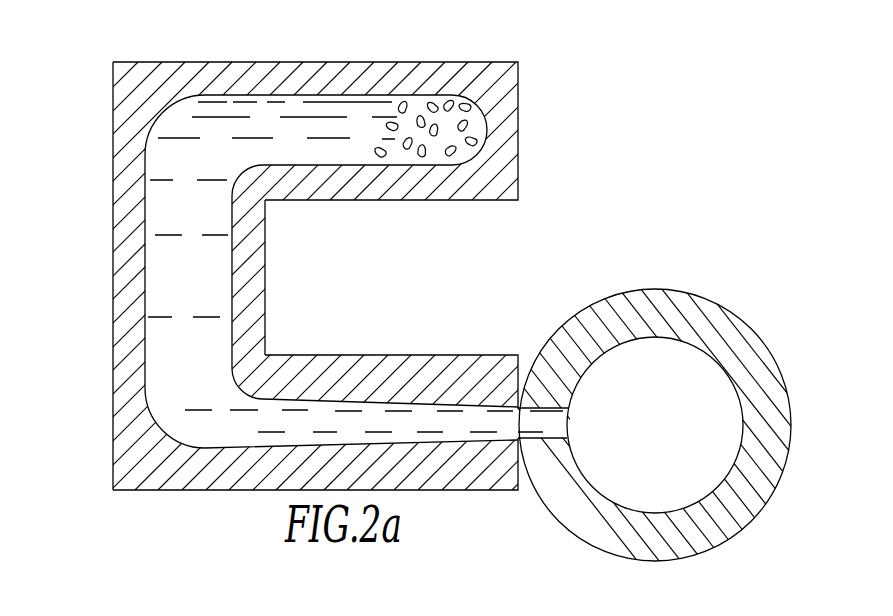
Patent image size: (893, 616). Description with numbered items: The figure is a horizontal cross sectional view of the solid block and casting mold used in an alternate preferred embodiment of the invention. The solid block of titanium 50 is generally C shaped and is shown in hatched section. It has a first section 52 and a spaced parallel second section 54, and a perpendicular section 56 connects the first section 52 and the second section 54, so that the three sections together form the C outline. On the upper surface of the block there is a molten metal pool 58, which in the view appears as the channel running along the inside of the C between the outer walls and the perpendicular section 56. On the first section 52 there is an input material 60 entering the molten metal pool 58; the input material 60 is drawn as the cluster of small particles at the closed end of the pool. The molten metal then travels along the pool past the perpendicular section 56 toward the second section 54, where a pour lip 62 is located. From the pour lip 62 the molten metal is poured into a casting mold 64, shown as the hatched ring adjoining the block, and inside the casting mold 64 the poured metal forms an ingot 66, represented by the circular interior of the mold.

The solid block of titanium 50 is at (122, 188).
The first section 52 is at (519, 80).
The second section 54 is at (473, 355).
The perpendicular section 56 is at (265, 280).
The molten metal pool 58 is at (265, 108).
The input material 60 is at (437, 150).
The pour lip 62 is at (548, 417).
The casting mold 64 is at (747, 328).
The ingot 66 is at (643, 347).